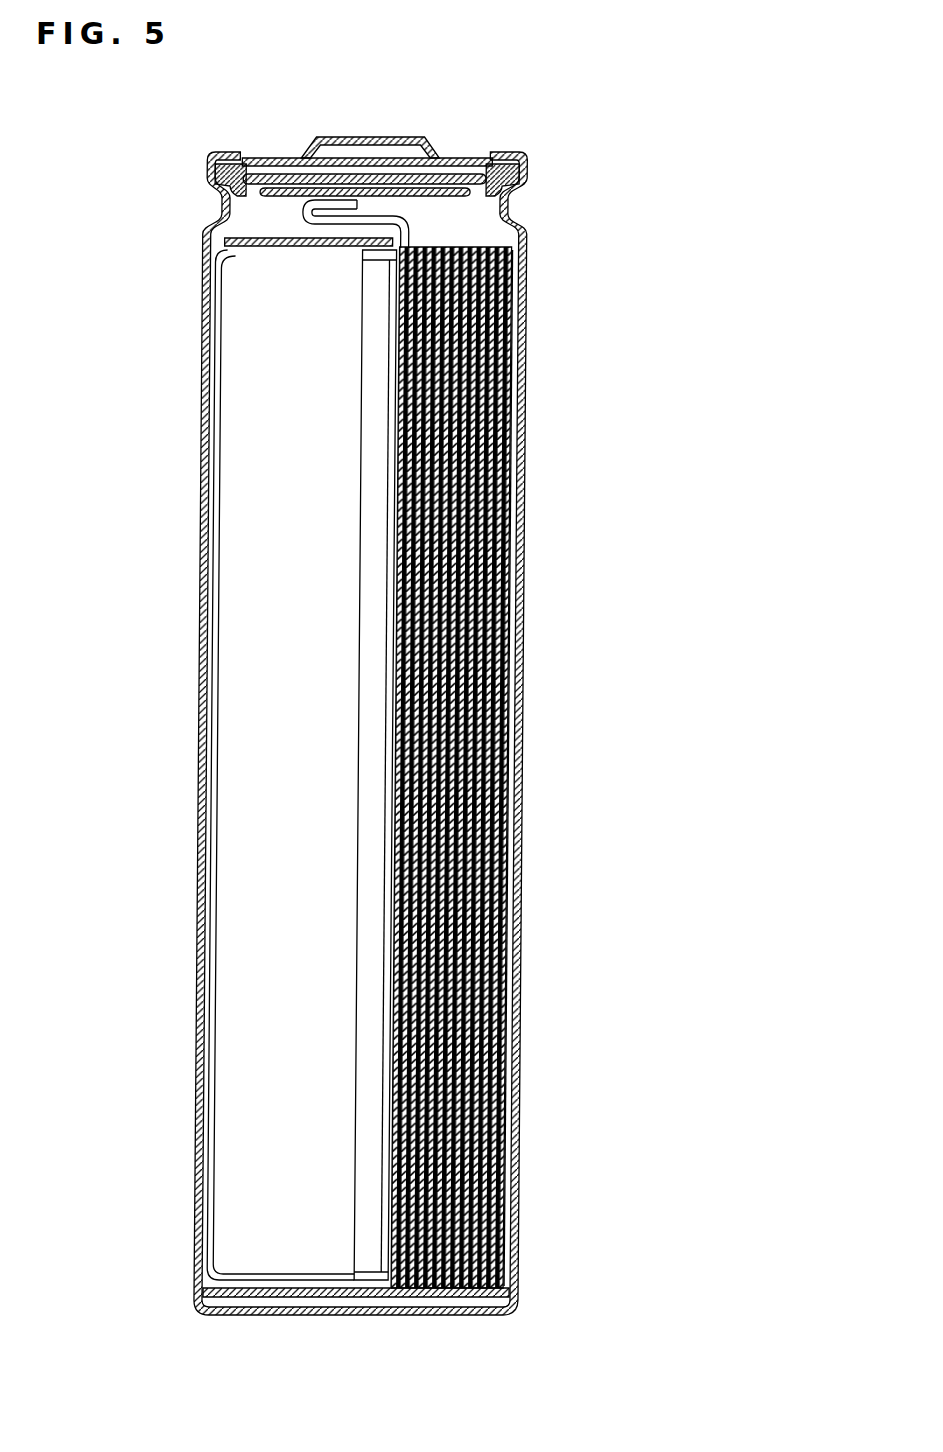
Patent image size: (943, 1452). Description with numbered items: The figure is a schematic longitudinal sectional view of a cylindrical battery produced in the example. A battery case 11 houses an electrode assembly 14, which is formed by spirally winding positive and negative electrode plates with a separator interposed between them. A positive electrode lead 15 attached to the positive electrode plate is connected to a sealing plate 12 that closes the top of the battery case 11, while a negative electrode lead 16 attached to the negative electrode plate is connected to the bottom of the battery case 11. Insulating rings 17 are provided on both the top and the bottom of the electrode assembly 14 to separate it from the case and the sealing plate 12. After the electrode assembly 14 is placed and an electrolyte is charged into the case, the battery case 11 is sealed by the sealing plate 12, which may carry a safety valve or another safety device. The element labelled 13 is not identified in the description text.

The battery case 11 is at (523, 990).
The sealing plate 12 is at (390, 138).
The sealing plate 13 is at (516, 157).
The electrode assembly 14 is at (525, 690).
The positive electrode lead 15 is at (296, 207).
The negative electrode lead 16 is at (517, 1232).
The insulating ring 17 is at (518, 227).